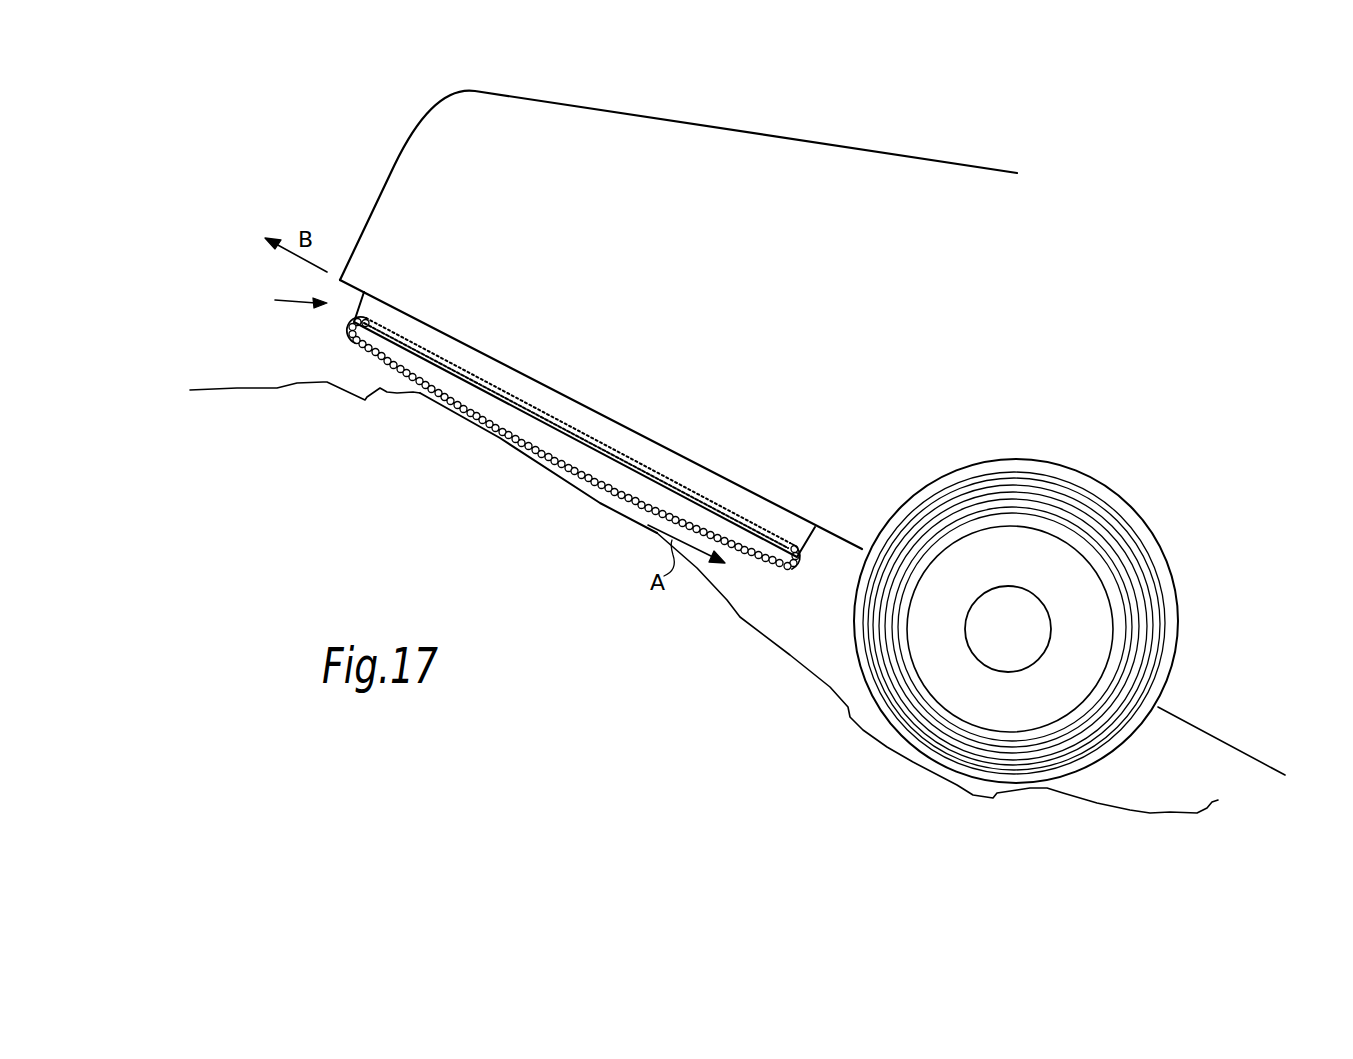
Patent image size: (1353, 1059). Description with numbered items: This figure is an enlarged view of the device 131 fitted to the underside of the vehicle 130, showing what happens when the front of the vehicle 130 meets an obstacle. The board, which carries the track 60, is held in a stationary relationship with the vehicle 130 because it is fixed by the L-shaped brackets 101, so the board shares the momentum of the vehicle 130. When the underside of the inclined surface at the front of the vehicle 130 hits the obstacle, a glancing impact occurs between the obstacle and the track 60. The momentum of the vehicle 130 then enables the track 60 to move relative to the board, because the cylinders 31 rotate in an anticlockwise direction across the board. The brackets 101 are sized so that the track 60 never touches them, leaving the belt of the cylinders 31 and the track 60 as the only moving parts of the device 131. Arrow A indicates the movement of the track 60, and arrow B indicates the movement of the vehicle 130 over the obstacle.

The vehicle 130 is at (690, 117).
The L-shaped bracket 101 is at (380, 310).
The track 60 is at (352, 336).
The cylinder 31 is at (473, 420).
The device 131 is at (286, 300).